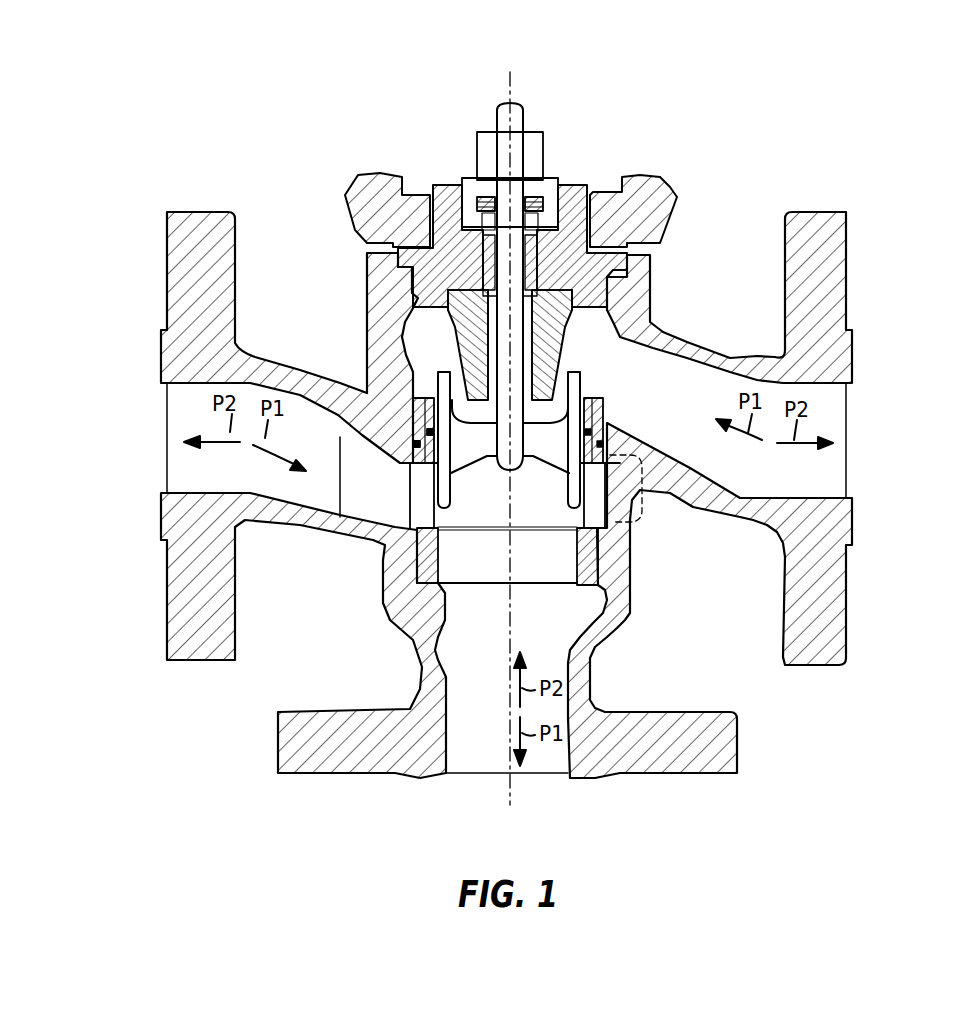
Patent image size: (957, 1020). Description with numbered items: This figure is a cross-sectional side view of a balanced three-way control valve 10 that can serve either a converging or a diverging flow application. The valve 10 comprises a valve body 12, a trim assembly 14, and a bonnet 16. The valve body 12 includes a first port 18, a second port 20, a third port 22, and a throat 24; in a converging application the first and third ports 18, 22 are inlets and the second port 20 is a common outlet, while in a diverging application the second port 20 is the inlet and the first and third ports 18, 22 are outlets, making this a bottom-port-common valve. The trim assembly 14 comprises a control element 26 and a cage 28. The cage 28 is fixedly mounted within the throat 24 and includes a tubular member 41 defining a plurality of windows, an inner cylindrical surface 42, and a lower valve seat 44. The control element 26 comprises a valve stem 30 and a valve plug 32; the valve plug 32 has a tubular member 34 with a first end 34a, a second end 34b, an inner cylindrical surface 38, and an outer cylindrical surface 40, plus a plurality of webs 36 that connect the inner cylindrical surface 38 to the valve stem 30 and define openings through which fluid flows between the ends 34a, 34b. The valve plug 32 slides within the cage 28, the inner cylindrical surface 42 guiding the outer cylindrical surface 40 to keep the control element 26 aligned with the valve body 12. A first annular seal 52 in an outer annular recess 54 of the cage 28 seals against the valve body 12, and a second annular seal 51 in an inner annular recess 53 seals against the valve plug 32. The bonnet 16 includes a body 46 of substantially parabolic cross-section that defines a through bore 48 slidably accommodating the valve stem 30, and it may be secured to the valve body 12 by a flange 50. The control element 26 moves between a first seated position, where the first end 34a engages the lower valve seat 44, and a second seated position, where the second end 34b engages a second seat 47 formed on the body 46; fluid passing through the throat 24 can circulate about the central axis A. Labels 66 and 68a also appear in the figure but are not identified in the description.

The three-way control valve 10 is at (639, 122).
The valve body 12 is at (820, 210).
The trim assembly 14 is at (598, 396).
The bonnet 16 is at (448, 178).
The first port 18 is at (182, 492).
The second port 20 is at (560, 773).
The third port 22 is at (832, 387).
The throat 24 is at (557, 585).
The control element 26 is at (444, 362).
The cage 28 is at (414, 573).
The valve stem 30 is at (522, 118).
The valve plug 32 is at (397, 483).
The tubular member 34 is at (648, 325).
The first end 34a is at (448, 520).
The second end 34b is at (612, 300).
The webs 36 is at (458, 430).
The inner cylindrical surface 38 is at (538, 530).
The outer cylindrical surface 40 is at (355, 540).
The tubular member 41 is at (597, 404).
The inner cylindrical surface 42 is at (563, 452).
The lower valve seat 44 is at (478, 530).
The body 46 is at (572, 195).
The second seat 47 is at (465, 342).
The through bore 48 is at (498, 350).
The flange 50 is at (652, 185).
The second annular seal 51 is at (352, 393).
The first annular seal 52 is at (280, 367).
The inner annular recess 53 is at (598, 422).
The outer annular recess 54 is at (603, 460).
The balancing port 66 is at (627, 530).
The passage wall 68a is at (329, 540).
The central axis A is at (516, 80).